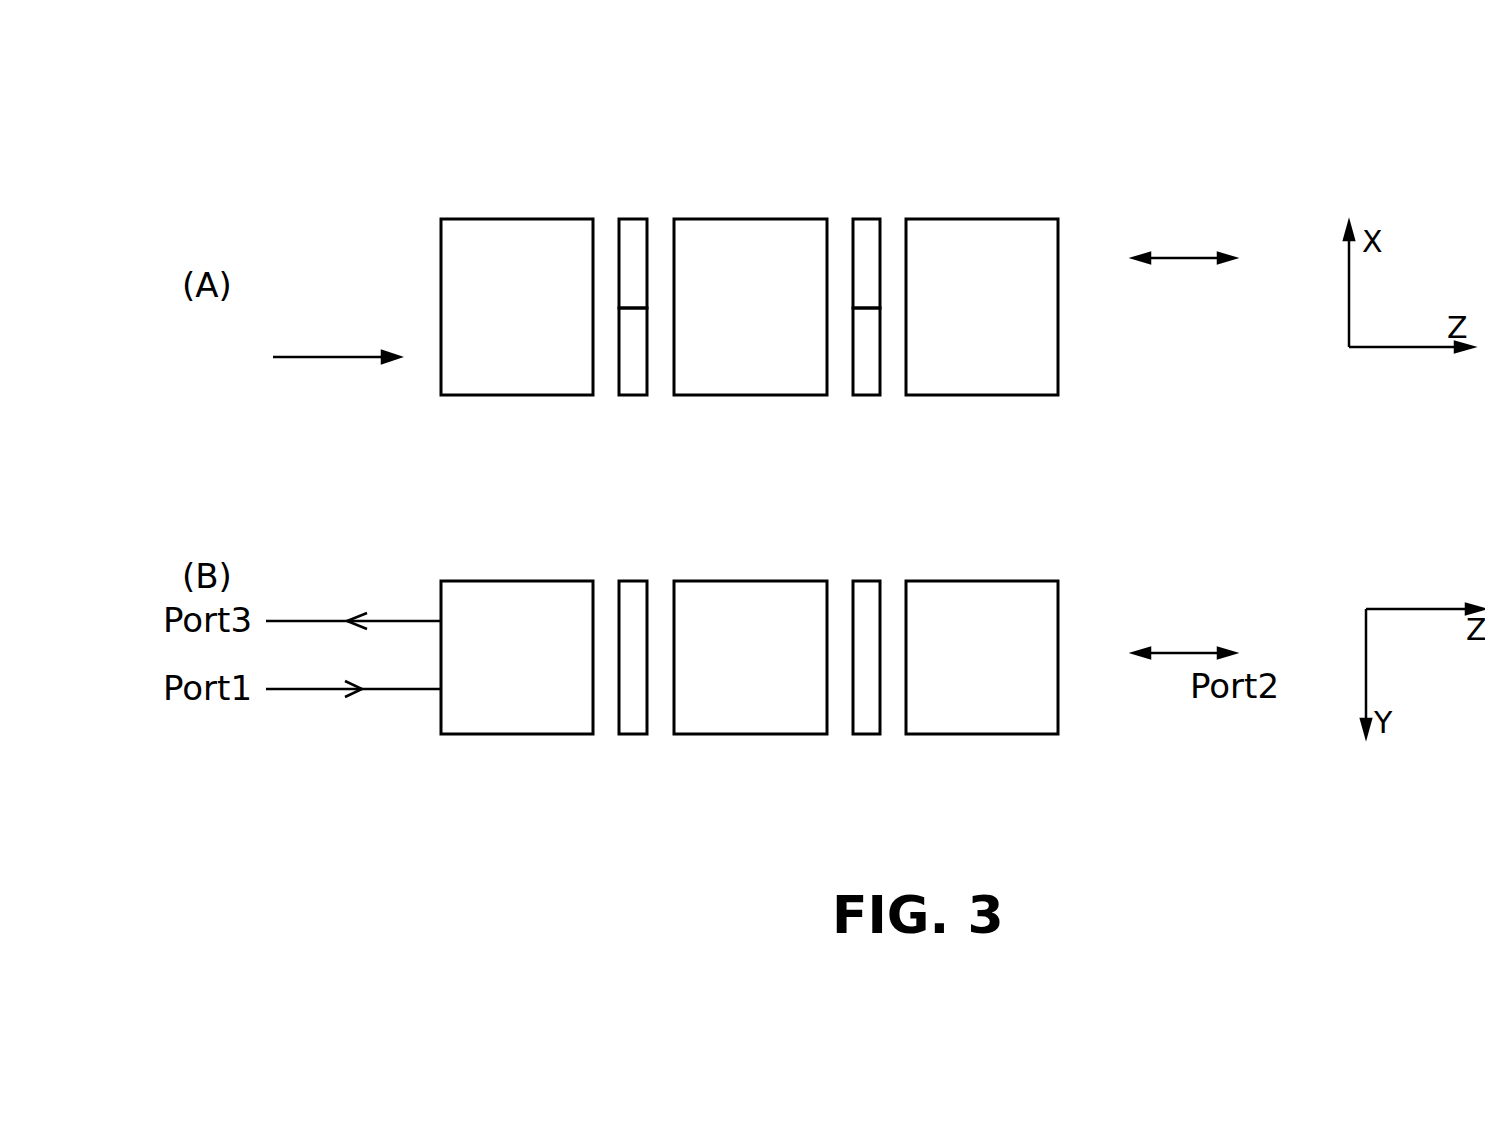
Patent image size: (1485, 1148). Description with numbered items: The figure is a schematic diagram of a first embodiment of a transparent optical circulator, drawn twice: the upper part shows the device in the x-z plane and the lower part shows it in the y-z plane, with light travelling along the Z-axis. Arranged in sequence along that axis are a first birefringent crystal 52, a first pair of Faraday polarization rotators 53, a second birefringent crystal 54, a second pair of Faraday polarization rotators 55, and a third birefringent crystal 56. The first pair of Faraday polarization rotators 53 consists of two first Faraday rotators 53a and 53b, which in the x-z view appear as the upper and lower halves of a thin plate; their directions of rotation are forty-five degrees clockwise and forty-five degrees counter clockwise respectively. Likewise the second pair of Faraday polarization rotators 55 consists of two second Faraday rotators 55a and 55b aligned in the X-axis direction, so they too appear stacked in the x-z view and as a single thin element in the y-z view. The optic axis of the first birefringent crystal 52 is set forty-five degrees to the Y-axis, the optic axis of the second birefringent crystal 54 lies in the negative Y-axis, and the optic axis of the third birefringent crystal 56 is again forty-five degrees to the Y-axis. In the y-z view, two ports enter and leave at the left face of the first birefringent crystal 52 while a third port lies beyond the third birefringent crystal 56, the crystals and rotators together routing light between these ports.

The first birefringent crystal 52 is at (531, 365).
The first pair of Faraday polarization rotators 53 is at (633, 710).
The first Faraday rotator 53a is at (631, 243).
The first Faraday rotator 53b is at (627, 380).
The second birefringent crystal 54 is at (761, 367).
The second pair of Faraday polarization rotators 55 is at (866, 718).
The second Faraday rotator 55a is at (865, 242).
The second Faraday rotator 55b is at (872, 372).
The third birefringent crystal 56 is at (998, 365).